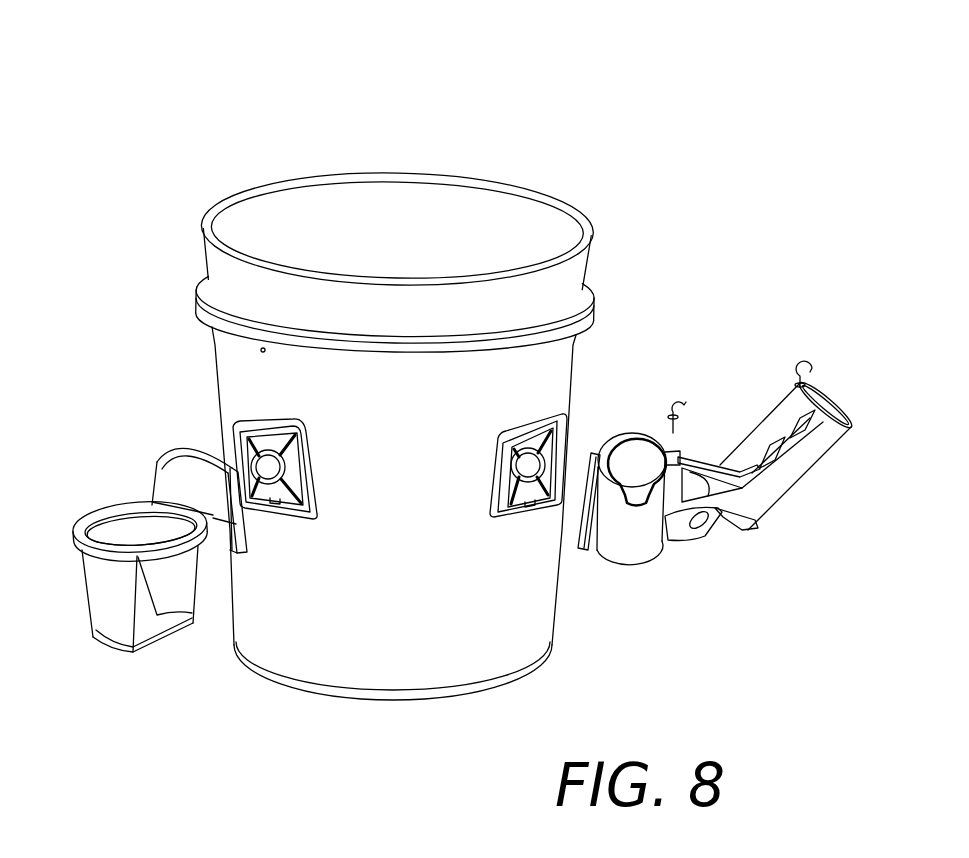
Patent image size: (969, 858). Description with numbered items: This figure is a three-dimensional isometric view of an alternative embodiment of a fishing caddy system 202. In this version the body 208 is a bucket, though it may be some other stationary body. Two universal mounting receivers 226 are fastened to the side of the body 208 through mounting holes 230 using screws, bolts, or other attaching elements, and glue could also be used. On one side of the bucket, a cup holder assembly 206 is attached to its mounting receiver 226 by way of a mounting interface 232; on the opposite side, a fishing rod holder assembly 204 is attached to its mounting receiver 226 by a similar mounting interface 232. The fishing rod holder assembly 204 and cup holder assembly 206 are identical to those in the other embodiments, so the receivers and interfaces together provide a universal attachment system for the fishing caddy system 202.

The fishing caddy system 202 is at (207, 104).
The fishing rod holder assembly 204 is at (691, 318).
The cup holder assembly 206 is at (106, 405).
The body 208 is at (418, 177).
The universal mounting receivers 226 is at (497, 457).
The mounting holes 230 is at (542, 437).
The mounting interfaces 232 is at (182, 446).